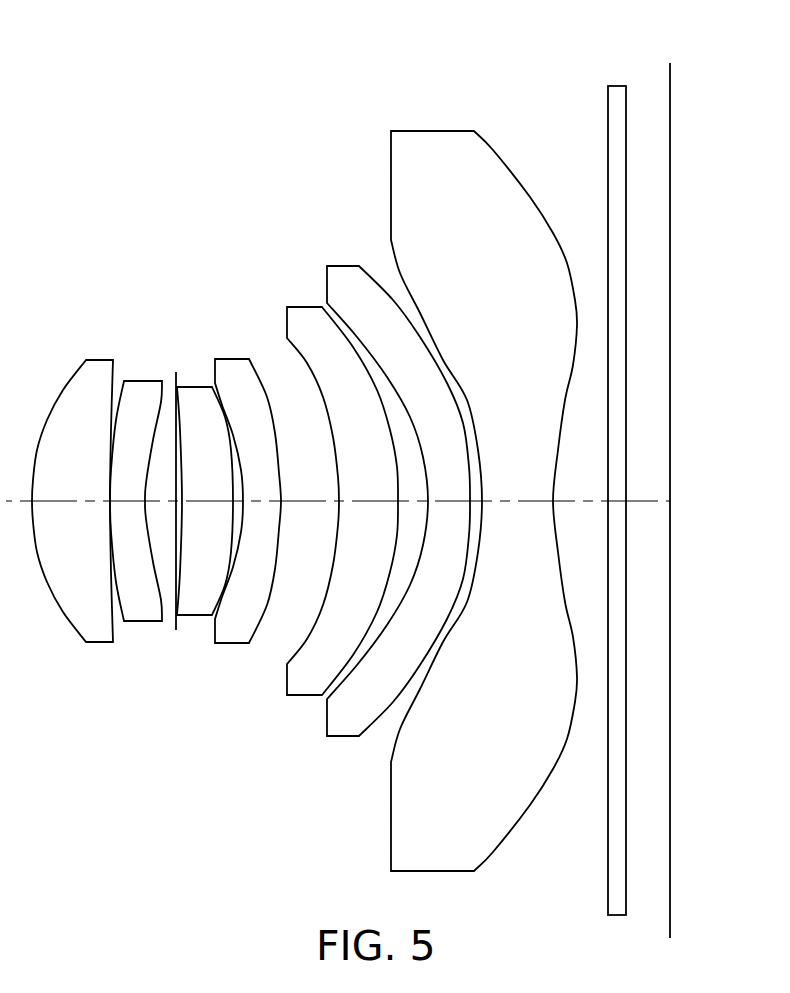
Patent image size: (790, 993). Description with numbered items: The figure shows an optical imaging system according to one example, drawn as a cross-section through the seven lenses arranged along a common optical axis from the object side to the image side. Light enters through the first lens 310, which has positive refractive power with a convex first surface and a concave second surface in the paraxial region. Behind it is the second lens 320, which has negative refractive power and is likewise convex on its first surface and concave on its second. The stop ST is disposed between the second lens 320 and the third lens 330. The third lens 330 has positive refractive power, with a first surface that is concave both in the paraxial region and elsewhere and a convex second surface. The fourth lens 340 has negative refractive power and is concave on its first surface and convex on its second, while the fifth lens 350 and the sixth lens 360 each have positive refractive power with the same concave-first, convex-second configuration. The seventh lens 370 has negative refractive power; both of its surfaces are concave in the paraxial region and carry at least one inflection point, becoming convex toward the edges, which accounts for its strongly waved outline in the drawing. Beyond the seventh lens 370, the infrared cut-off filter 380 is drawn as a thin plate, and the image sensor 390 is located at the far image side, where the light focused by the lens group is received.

The first lens 310 is at (62, 392).
The second lens 320 is at (127, 381).
The stop ST is at (175, 376).
The third lens 330 is at (193, 386).
The fourth lens 340 is at (232, 359).
The fifth lens 350 is at (293, 307).
The sixth lens 360 is at (338, 266).
The seventh lens 370 is at (442, 131).
The infrared cut-off filter 380 is at (613, 86).
The image sensor 390 is at (670, 80).